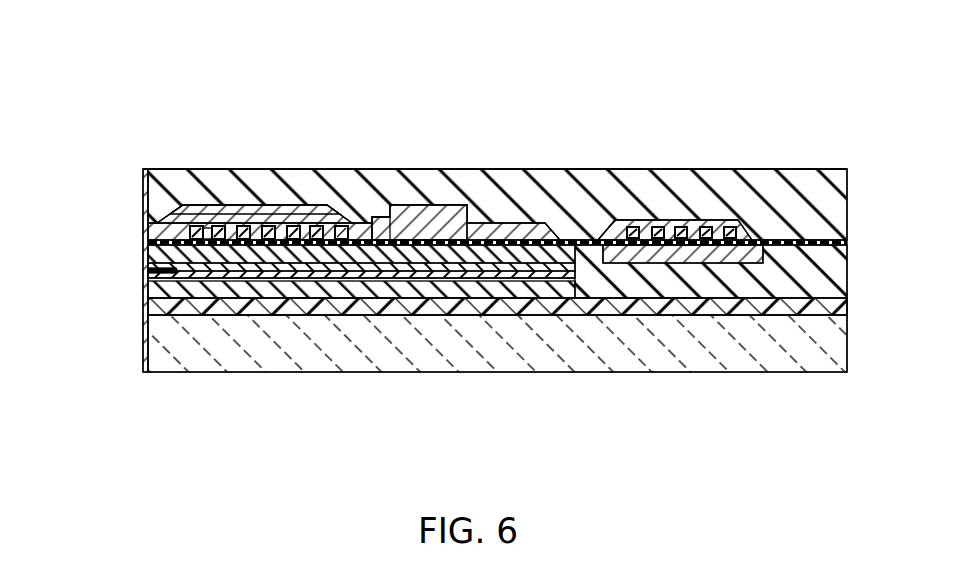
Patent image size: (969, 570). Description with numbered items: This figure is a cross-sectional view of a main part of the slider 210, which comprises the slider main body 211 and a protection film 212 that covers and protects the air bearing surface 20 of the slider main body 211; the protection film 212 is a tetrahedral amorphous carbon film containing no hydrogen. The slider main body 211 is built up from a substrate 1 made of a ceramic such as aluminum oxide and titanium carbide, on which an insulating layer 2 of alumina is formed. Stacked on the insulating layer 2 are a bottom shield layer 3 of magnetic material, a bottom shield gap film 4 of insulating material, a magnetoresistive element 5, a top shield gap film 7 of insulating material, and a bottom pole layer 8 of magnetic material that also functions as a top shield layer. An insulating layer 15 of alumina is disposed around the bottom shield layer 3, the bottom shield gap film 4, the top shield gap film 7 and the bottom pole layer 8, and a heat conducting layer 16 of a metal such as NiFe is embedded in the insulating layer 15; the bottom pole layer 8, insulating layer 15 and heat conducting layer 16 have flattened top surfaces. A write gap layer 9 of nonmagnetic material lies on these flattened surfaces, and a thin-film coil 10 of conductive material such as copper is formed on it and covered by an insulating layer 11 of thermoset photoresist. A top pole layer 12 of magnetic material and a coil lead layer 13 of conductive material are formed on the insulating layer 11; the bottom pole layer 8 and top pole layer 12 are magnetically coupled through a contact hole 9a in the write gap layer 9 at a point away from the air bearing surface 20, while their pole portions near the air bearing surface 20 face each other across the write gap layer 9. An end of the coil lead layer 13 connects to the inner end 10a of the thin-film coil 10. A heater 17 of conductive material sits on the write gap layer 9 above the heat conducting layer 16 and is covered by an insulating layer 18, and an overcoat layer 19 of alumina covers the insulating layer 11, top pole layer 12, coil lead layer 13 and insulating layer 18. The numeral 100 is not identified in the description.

The substrate 1 is at (202, 357).
The insulating layer 2 is at (240, 310).
The bottom shield layer 3 is at (277, 293).
The bottom shield gap film 4 is at (313, 278).
The magnetoresistive (MR) element 5 is at (155, 272).
The top shield gap film 7 is at (348, 270).
The bottom pole layer 8 is at (380, 256).
The write gap layer 9 is at (160, 225).
The contact hole 9a is at (350, 230).
The thin-film coil 10 is at (260, 228).
The inner end of the thin-film coil 10a is at (373, 218).
The insulating layer 11 is at (297, 225).
The top pole layer 12 is at (222, 212).
The coil lead layer 13 is at (420, 206).
The insulating layer 15 is at (660, 284).
The heat conducting layer 16 is at (720, 255).
The heater 17 is at (662, 228).
The insulating layer 18 is at (708, 232).
The overcoat layer 19 is at (470, 186).
The air bearing surface 20 is at (138, 250).
The thin film element 100 is at (197, 203).
The slider 210 is at (597, 142).
The slider main body 211 is at (526, 168).
The protection film 212 is at (146, 217).